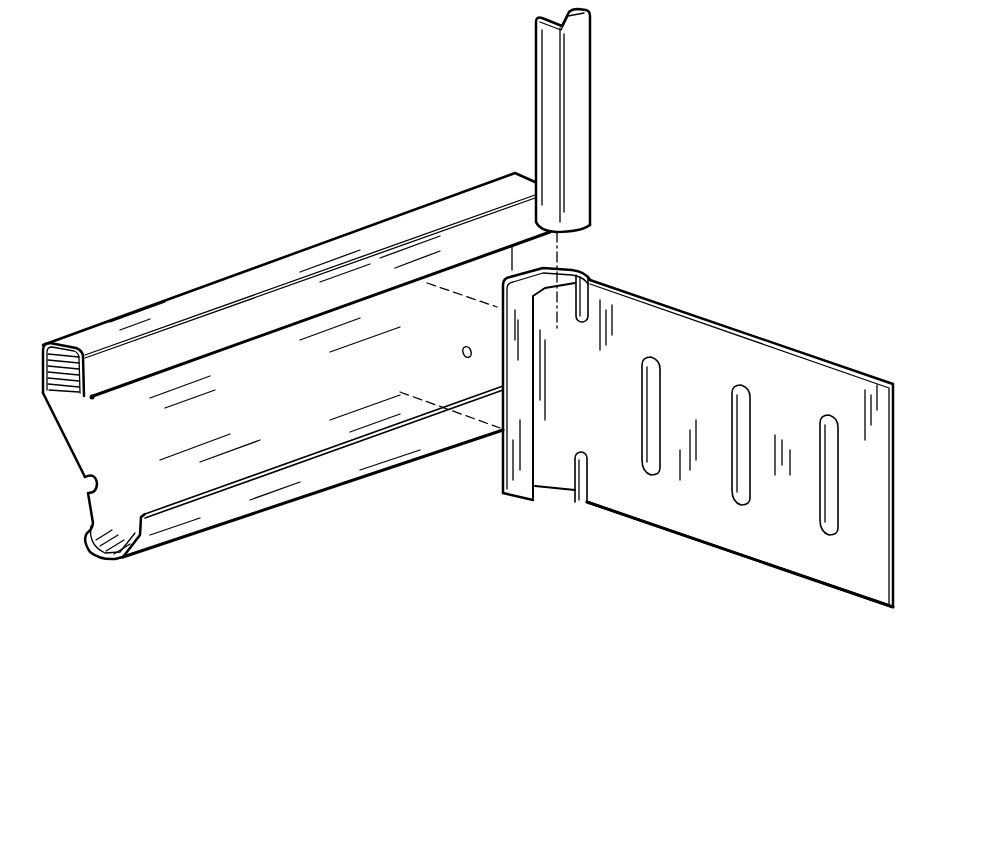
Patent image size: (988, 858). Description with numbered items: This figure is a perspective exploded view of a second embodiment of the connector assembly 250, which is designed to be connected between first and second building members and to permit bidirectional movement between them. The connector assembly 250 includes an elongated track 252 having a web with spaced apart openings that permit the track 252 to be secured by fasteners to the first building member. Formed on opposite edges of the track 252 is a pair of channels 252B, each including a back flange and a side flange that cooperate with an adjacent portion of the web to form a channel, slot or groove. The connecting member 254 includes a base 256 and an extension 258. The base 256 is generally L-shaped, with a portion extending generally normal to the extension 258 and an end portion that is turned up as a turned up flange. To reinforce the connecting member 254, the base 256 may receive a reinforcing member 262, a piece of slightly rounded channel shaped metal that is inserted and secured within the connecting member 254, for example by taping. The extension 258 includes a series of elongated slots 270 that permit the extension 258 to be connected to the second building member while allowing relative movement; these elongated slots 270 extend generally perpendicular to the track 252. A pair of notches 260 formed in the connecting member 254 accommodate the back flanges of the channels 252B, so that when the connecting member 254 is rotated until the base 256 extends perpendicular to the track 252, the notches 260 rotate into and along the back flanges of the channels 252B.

The connector assembly 250 is at (322, 147).
The track 252 is at (116, 435).
The channels 252B is at (270, 273).
The connecting member 254 is at (747, 220).
The base 256 is at (515, 473).
The extension 258 is at (698, 512).
The notches 260 is at (587, 273).
The reinforcing member 262 is at (578, 122).
The elongated slots 270 is at (827, 520).